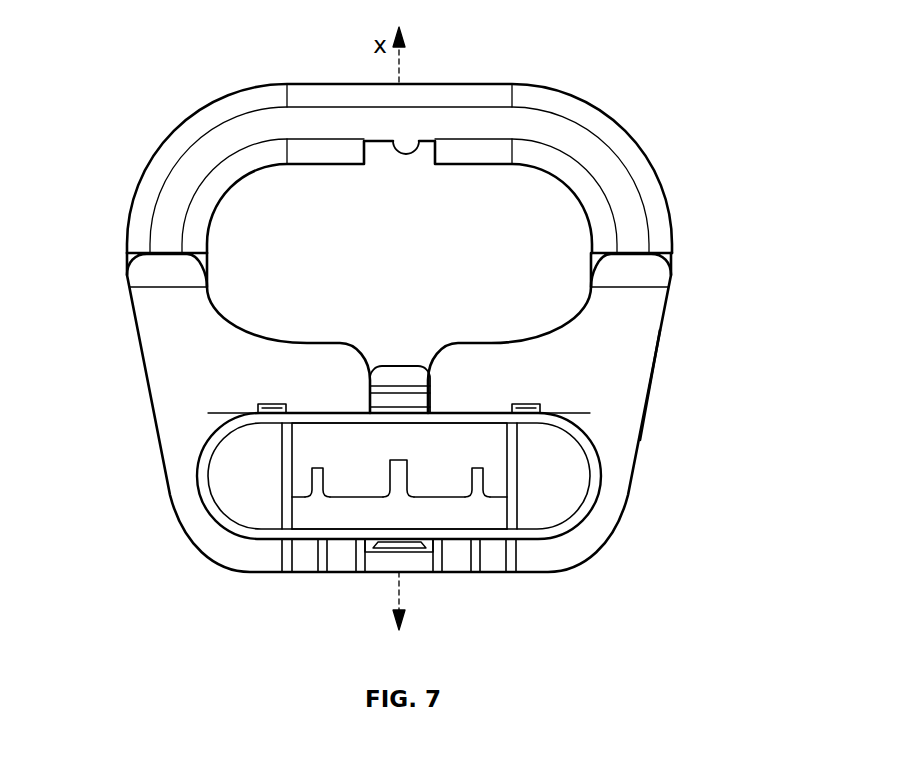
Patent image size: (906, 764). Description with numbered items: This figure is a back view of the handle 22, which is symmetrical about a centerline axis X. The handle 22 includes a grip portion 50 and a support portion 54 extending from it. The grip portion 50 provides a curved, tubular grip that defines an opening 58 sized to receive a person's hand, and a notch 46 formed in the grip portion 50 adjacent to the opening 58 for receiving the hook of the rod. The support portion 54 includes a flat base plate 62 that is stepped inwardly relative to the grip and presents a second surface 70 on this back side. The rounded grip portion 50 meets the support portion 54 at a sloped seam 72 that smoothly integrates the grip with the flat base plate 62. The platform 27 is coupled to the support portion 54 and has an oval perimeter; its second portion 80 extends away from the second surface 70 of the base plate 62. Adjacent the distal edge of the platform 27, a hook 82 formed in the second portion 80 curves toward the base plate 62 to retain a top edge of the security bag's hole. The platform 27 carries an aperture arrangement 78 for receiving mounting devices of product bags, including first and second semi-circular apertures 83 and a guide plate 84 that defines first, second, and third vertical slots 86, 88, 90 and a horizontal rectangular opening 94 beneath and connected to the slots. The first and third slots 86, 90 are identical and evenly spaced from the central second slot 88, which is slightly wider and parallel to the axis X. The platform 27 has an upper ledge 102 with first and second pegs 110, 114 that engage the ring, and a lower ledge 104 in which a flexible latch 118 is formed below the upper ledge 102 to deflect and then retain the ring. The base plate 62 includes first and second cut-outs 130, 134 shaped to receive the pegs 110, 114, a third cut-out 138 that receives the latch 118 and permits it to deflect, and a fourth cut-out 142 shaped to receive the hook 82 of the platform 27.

The handle 22 is at (670, 28).
The notch 46 is at (418, 152).
The grip portion 50 is at (562, 102).
The opening 58 is at (236, 232).
The seam 72 is at (650, 272).
The base plate 62 is at (150, 347).
The support portion 54 is at (630, 382).
The second surface 70 is at (566, 375).
The platform 27 is at (198, 457).
The first and second semi-circular apertures 83 is at (228, 487).
The second portion 80 is at (598, 455).
The upper ledge 102 is at (297, 415).
The guide plate 84 is at (447, 453).
The horizontal rectangular opening 94 is at (483, 515).
The first vertical slot 86 is at (320, 477).
The second vertical slot 88 is at (398, 470).
The third vertical slot 90 is at (480, 470).
The hook 82 is at (387, 383).
The fourth cut-out 142 is at (425, 383).
The second cut-out 134 is at (275, 405).
The first peg 110 is at (530, 405).
The second peg 114 is at (253, 413).
The first cut-out 130 is at (545, 408).
The lower ledge 104 is at (311, 537).
The aperture arrangement 78 is at (224, 545).
The latch 118 is at (395, 545).
The third cut-out 138 is at (418, 552).